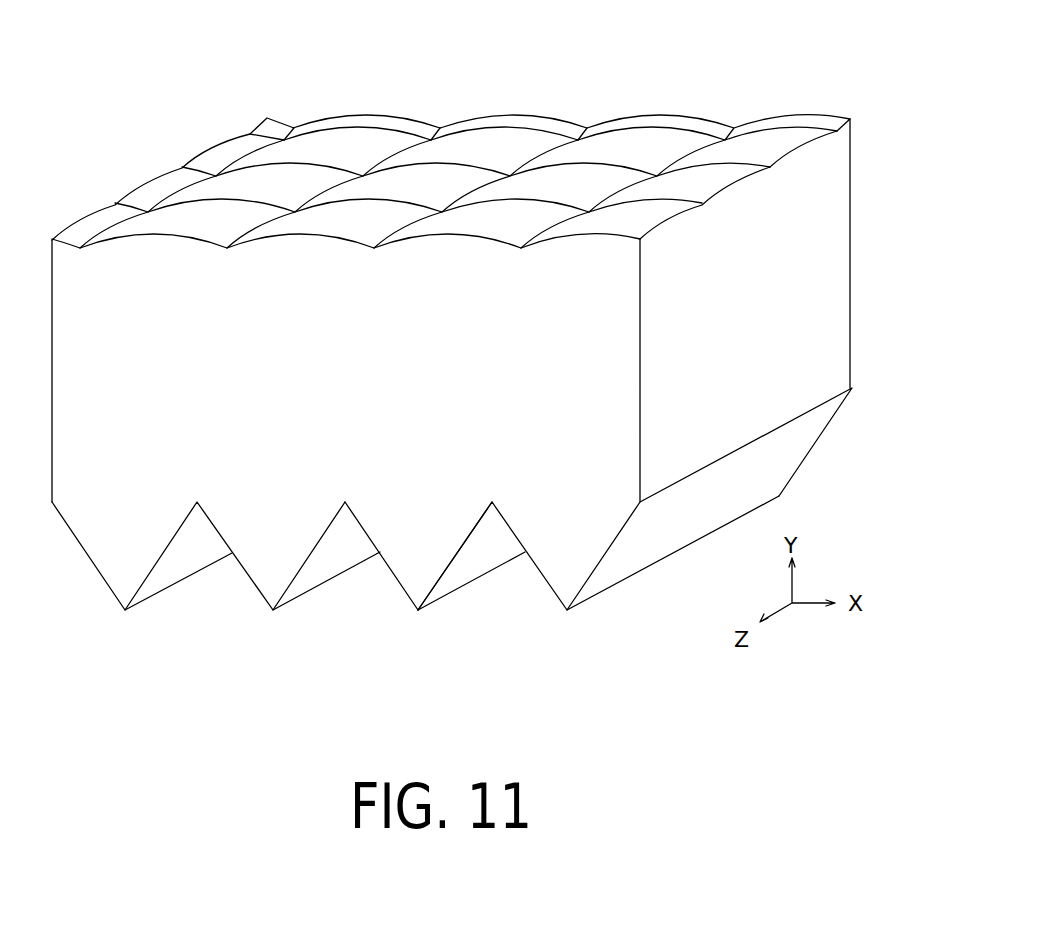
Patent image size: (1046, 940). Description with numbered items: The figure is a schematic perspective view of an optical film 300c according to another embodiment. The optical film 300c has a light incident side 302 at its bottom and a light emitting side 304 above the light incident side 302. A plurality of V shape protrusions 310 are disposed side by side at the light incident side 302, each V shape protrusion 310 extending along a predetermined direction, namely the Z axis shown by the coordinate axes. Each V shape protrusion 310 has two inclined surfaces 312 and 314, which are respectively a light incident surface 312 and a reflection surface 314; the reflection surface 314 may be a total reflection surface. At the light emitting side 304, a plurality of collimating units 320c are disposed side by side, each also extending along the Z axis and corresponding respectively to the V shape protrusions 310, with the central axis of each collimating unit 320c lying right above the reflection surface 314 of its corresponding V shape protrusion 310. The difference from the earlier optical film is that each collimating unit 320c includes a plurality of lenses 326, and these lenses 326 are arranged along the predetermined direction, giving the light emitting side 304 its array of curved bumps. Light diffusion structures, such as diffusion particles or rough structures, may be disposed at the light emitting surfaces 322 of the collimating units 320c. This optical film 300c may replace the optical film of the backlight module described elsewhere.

The optical film 300c is at (677, 665).
The light incident side 302 is at (77, 576).
The light emitting side 304 is at (122, 155).
The V shape protrusion 310 is at (257, 572).
The inclined surface 312 is at (399, 591).
The reflection surface 314 is at (477, 544).
The collimating unit 320c is at (673, 96).
The light emitting surface 322 is at (765, 125).
The lens 326 is at (512, 120).